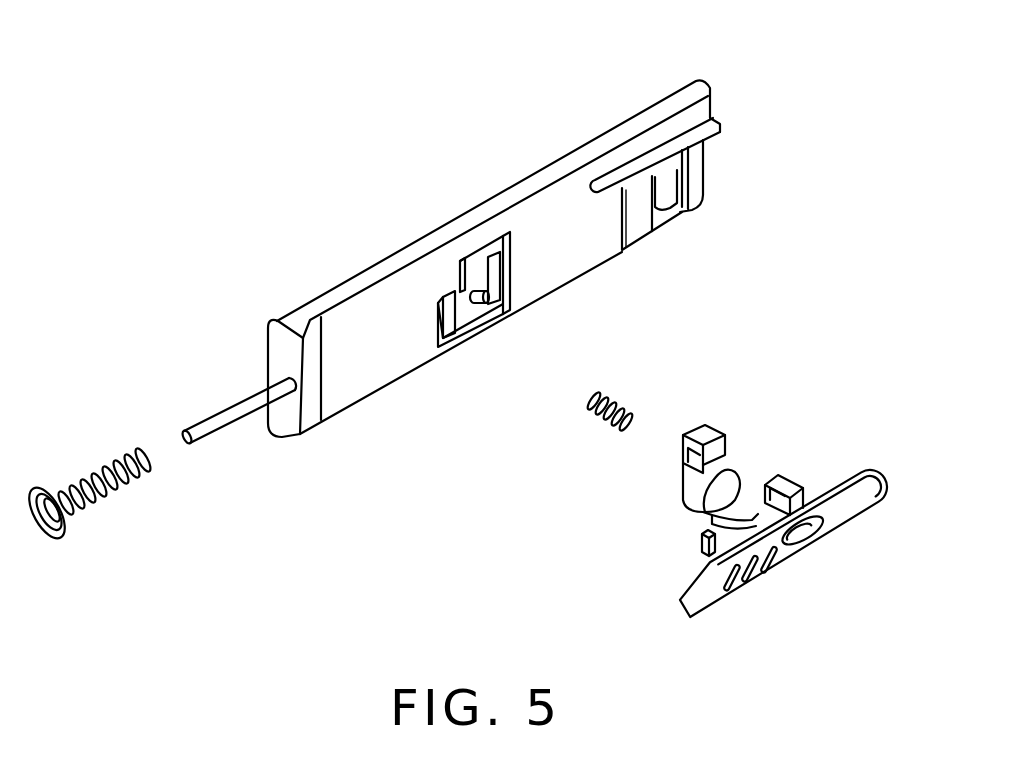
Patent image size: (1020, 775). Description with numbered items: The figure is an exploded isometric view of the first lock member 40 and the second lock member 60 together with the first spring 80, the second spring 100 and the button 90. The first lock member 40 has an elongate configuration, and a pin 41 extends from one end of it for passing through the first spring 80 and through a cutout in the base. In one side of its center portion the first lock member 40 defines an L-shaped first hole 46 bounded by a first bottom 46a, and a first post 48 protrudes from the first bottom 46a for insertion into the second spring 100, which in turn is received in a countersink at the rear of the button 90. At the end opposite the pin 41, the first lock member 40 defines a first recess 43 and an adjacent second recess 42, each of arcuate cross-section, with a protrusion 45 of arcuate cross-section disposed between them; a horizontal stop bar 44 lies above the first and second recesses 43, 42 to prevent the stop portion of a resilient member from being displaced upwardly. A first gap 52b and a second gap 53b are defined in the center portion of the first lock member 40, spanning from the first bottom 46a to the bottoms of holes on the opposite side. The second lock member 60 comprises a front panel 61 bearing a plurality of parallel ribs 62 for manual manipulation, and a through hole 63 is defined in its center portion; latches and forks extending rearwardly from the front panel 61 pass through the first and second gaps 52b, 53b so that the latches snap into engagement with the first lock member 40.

The first lock member 40 is at (482, 287).
The pin 41 is at (220, 425).
The second recess 42 is at (683, 210).
The first recess 43 is at (633, 223).
The horizontal stop bar 44 is at (690, 142).
The protrusion 45 is at (668, 180).
The first hole 46 is at (497, 306).
The first bottom 46a is at (462, 316).
The first post 48 is at (489, 298).
The first gap 52b is at (497, 268).
The second gap 53b is at (448, 308).
The second lock member 60 is at (793, 546).
The front panel 61 is at (860, 508).
The parallel ribs 62 is at (750, 569).
The through hole 63 is at (802, 530).
The first spring 80 is at (103, 467).
The button 90 is at (721, 424).
The second spring 100 is at (613, 398).